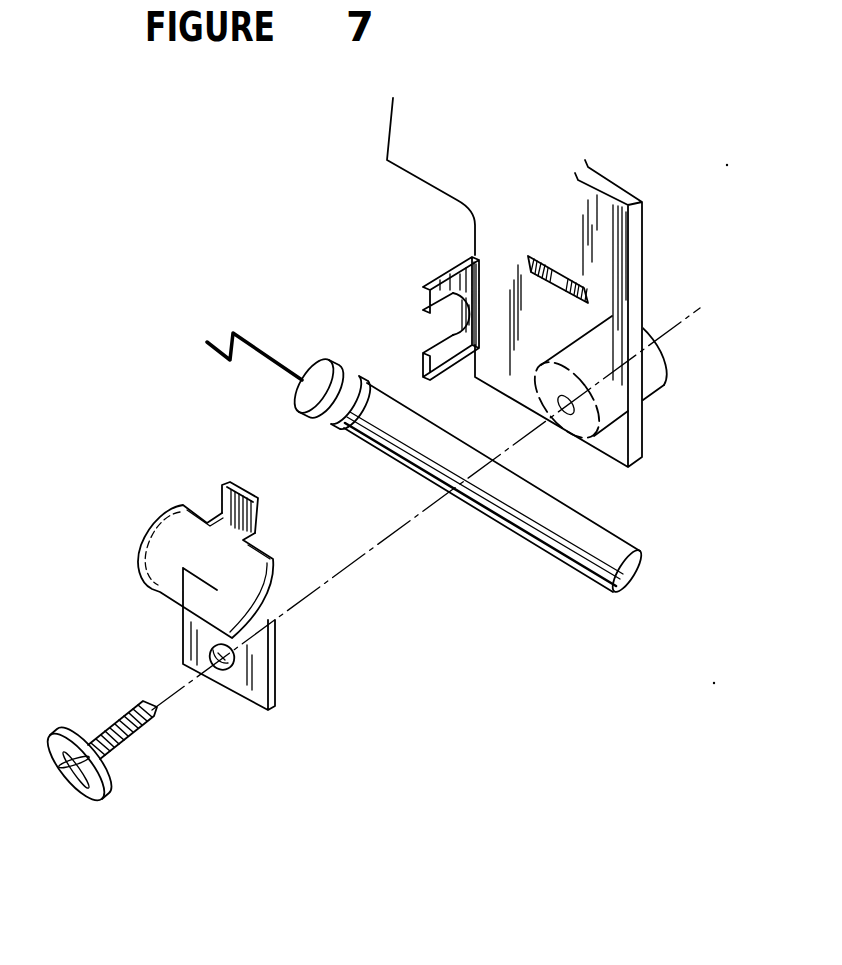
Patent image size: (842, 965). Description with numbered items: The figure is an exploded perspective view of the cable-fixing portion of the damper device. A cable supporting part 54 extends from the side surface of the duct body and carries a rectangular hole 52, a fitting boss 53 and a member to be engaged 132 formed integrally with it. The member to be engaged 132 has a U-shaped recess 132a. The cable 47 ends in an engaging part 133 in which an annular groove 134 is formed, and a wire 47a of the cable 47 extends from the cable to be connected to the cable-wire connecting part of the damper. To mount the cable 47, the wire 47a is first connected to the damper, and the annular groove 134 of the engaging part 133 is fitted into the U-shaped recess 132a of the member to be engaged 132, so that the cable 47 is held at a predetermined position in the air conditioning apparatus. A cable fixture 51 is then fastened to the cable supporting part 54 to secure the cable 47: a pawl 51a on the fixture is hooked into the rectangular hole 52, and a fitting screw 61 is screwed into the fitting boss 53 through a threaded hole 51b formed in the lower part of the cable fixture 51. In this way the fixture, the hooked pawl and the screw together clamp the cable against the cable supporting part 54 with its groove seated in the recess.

The cable 47 is at (460, 494).
The wire 47a is at (280, 355).
The cable fixture 51 is at (206, 610).
The pawl 51a is at (240, 500).
The threaded hole 51b is at (220, 670).
The rectangular hole 52 is at (531, 262).
The fitting boss 53 is at (650, 366).
The cable supporting part 54 is at (606, 259).
The fitting screw 61 is at (100, 800).
The member to be engaged 132 is at (417, 342).
The U-shaped recess 132a is at (458, 322).
The engaging part 133 is at (344, 424).
The annular groove 134 is at (314, 410).